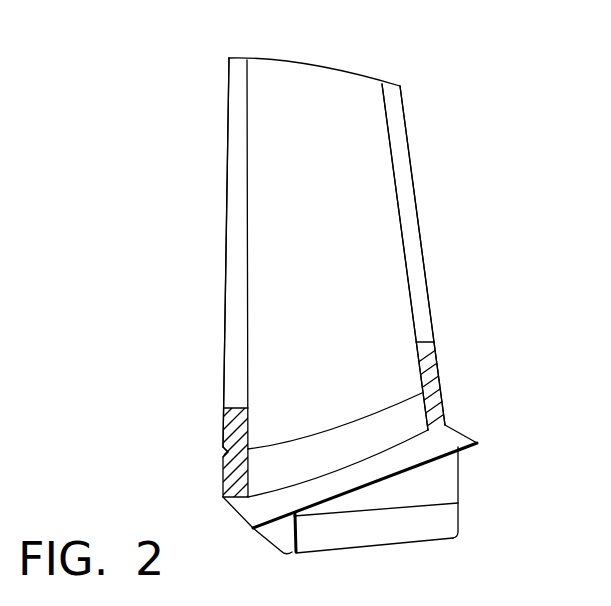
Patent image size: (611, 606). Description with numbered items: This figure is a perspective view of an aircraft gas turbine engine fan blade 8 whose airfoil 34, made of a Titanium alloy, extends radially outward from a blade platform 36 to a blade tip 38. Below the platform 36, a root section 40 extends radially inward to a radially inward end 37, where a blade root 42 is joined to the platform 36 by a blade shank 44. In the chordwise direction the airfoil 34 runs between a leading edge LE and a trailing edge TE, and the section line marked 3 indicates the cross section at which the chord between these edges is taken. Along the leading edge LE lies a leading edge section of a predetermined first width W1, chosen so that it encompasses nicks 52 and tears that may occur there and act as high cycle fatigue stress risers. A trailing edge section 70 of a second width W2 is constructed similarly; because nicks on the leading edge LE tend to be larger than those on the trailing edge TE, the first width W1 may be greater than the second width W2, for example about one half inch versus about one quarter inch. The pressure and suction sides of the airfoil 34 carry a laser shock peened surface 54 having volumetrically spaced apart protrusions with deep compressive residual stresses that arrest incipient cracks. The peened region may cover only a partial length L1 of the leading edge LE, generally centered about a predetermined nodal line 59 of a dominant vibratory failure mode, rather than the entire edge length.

The fan blade 8 is at (338, 313).
The airfoil 34 is at (318, 207).
The blade platform 36 is at (452, 440).
The radially inward end 37 is at (397, 547).
The blade tip 38 is at (314, 65).
The root section 40 is at (458, 503).
The blade root 42 is at (280, 543).
The blade shank 44 is at (458, 473).
The nicks 52 is at (223, 452).
The laser shock peened surface 54 is at (236, 478).
The nodal line 59 is at (367, 422).
The trailing edge section 70 is at (413, 262).
The leading edge LE is at (225, 236).
The trailing edge TE is at (427, 283).
The first width W1 is at (295, 305).
The second width W2 is at (384, 397).
The laser shock peened surface length L1 is at (138, 497).
The section line 3- 3 is at (163, 117).